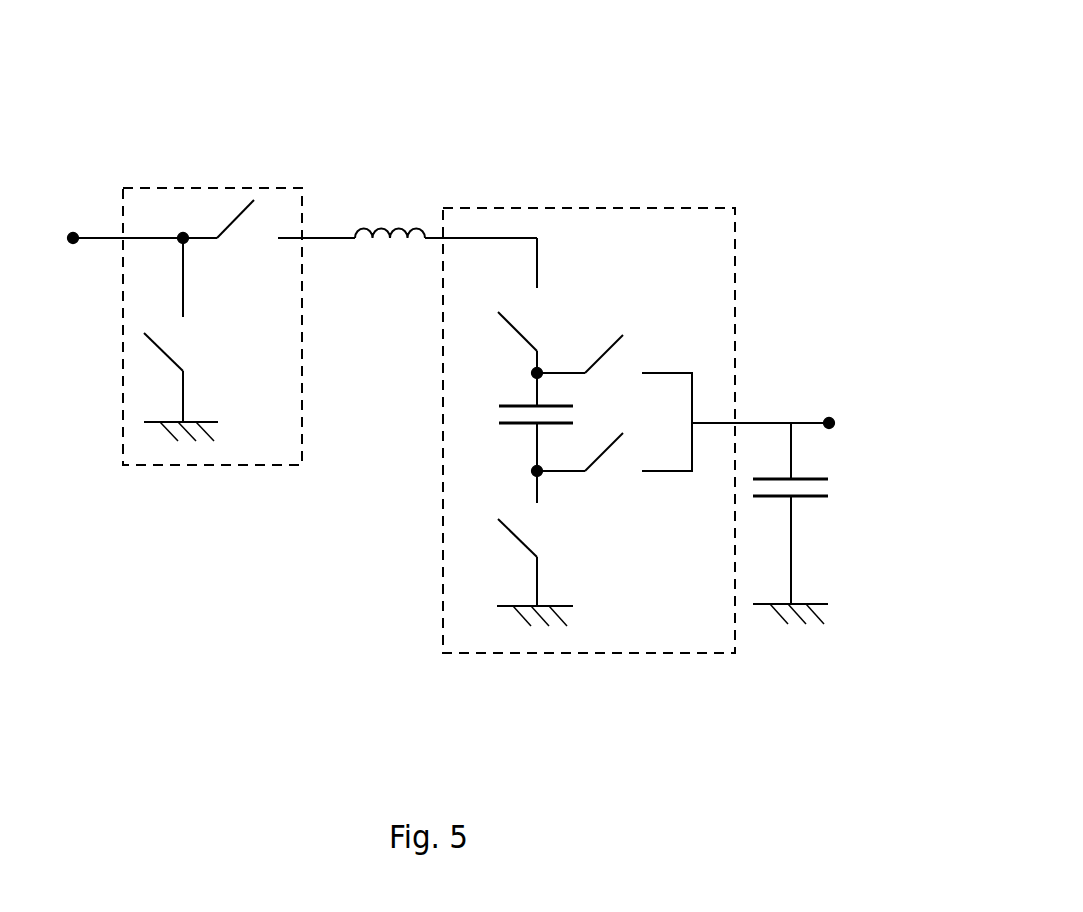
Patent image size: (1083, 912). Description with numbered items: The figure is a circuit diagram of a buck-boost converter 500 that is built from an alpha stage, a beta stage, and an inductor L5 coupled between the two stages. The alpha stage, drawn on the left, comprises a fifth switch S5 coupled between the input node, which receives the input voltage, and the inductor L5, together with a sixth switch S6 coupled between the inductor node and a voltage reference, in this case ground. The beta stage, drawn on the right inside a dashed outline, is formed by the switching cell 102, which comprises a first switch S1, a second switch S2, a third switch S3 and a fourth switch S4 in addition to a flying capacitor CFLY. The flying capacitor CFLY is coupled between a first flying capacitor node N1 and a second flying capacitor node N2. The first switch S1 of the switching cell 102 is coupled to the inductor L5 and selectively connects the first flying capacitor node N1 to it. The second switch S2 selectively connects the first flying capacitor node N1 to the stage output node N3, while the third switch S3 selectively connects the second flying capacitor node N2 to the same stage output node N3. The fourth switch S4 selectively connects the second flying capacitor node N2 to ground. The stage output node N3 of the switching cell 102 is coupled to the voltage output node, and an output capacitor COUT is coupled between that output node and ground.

The buck-boost converter 500 is at (674, 116).
The switching cell 102 is at (719, 249).
The first switch S1 is at (543, 342).
The second switch S2 is at (582, 369).
The third switch S3 is at (582, 467).
The fourth switch S4 is at (539, 562).
The fifth switch S5 is at (235, 236).
The sixth switch S6 is at (184, 377).
The inductor L5 is at (390, 215).
The flying capacitor CFLY is at (519, 422).
The output capacitor COUT is at (813, 513).
The first flying capacitor node N1 is at (514, 374).
The second flying capacitor node N2 is at (516, 474).
The stage output node N3 is at (735, 422).